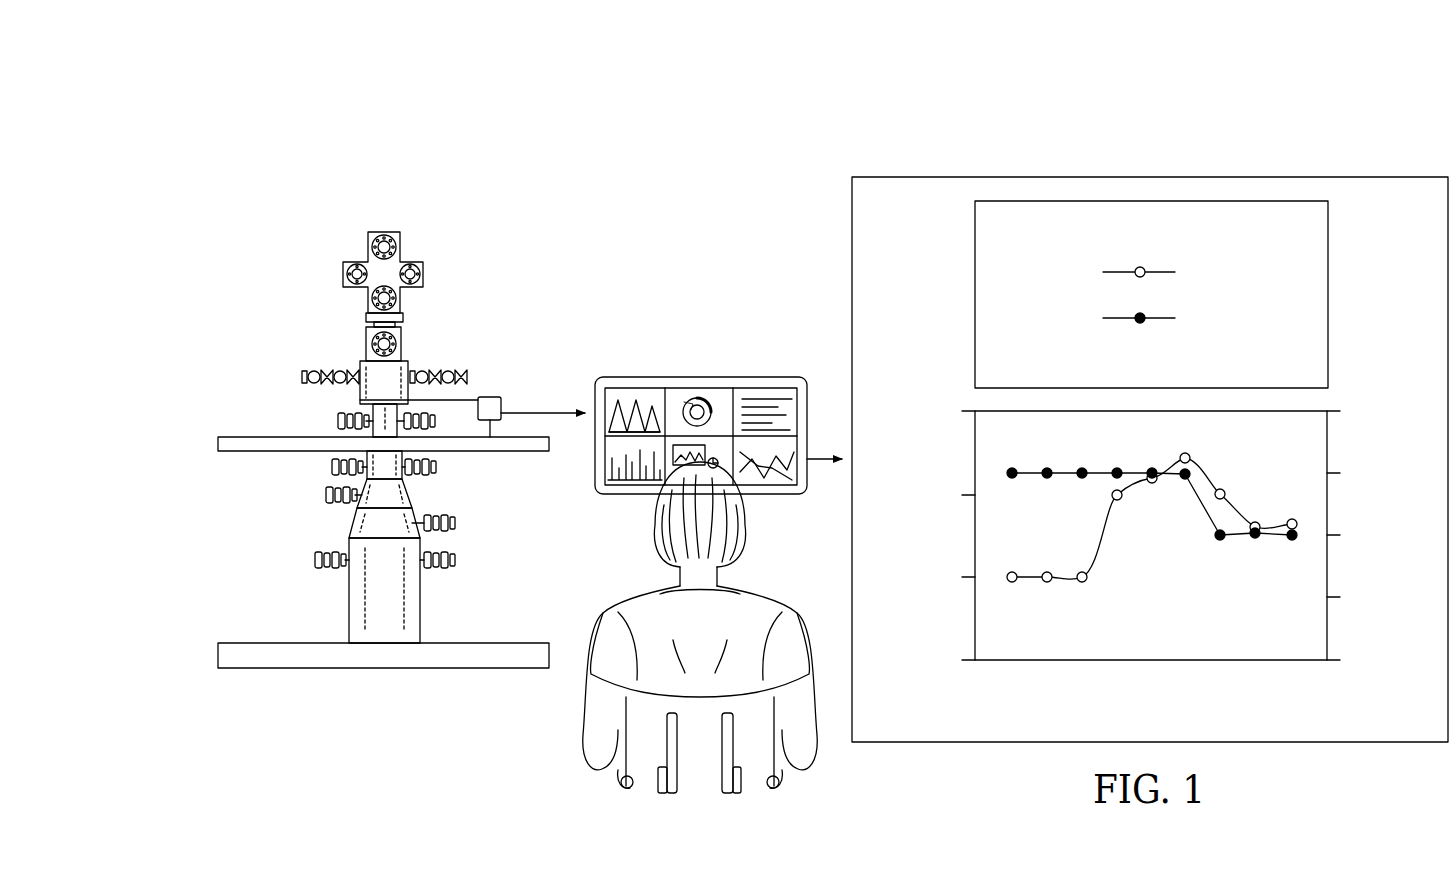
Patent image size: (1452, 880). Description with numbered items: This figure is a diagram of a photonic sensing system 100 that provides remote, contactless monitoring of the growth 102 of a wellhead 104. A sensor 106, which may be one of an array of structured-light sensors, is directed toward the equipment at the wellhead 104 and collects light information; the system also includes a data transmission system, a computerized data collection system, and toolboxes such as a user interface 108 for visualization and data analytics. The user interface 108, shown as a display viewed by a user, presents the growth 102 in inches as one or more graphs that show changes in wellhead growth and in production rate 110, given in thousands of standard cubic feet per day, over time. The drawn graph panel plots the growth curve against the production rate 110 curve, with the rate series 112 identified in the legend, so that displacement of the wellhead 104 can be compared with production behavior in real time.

The photonic sensing system 100 is at (432, 78).
The growth 102 is at (1246, 171).
The wellhead 104 is at (286, 264).
The sensor 106 is at (490, 396).
The user interface 108 is at (645, 361).
The production rate 110 is at (1118, 271).
The production rate curve 112 is at (1118, 321).